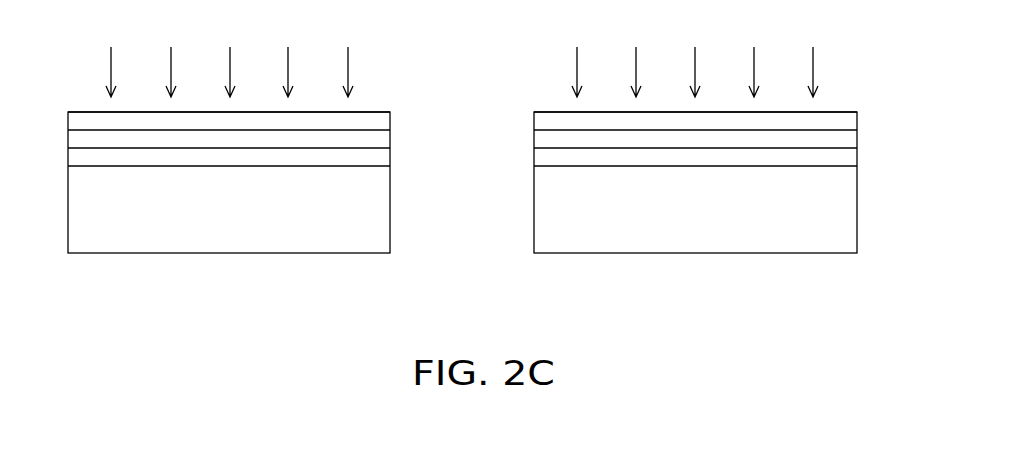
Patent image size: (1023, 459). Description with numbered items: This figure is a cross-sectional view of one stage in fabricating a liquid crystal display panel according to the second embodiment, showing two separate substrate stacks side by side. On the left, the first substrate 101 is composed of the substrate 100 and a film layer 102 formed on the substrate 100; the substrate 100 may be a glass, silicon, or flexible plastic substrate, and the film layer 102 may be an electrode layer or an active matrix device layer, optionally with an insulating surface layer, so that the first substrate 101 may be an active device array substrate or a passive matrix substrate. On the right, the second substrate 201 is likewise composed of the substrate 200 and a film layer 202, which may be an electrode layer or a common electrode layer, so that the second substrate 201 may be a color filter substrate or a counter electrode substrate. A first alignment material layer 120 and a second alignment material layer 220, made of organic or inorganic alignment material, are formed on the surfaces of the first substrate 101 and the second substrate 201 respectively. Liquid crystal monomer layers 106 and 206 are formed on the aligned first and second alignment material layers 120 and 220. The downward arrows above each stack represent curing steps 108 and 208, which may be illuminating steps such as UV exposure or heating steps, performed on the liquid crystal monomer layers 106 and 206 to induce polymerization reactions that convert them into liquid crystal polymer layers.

The substrate 100 is at (375, 206).
The first substrate 101 is at (478, 180).
The film layer 102 is at (375, 157).
The liquid crystal monomer layer 106 is at (375, 122).
The curing step 108 is at (348, 63).
The first alignment material layer 120 is at (376, 140).
The substrate 200 is at (842, 206).
The second substrate 201 is at (945, 180).
The film layer 202 is at (842, 157).
The liquid crystal monomer layer 206 is at (842, 122).
The curing step 208 is at (813, 63).
The second alignment material layer 220 is at (843, 140).